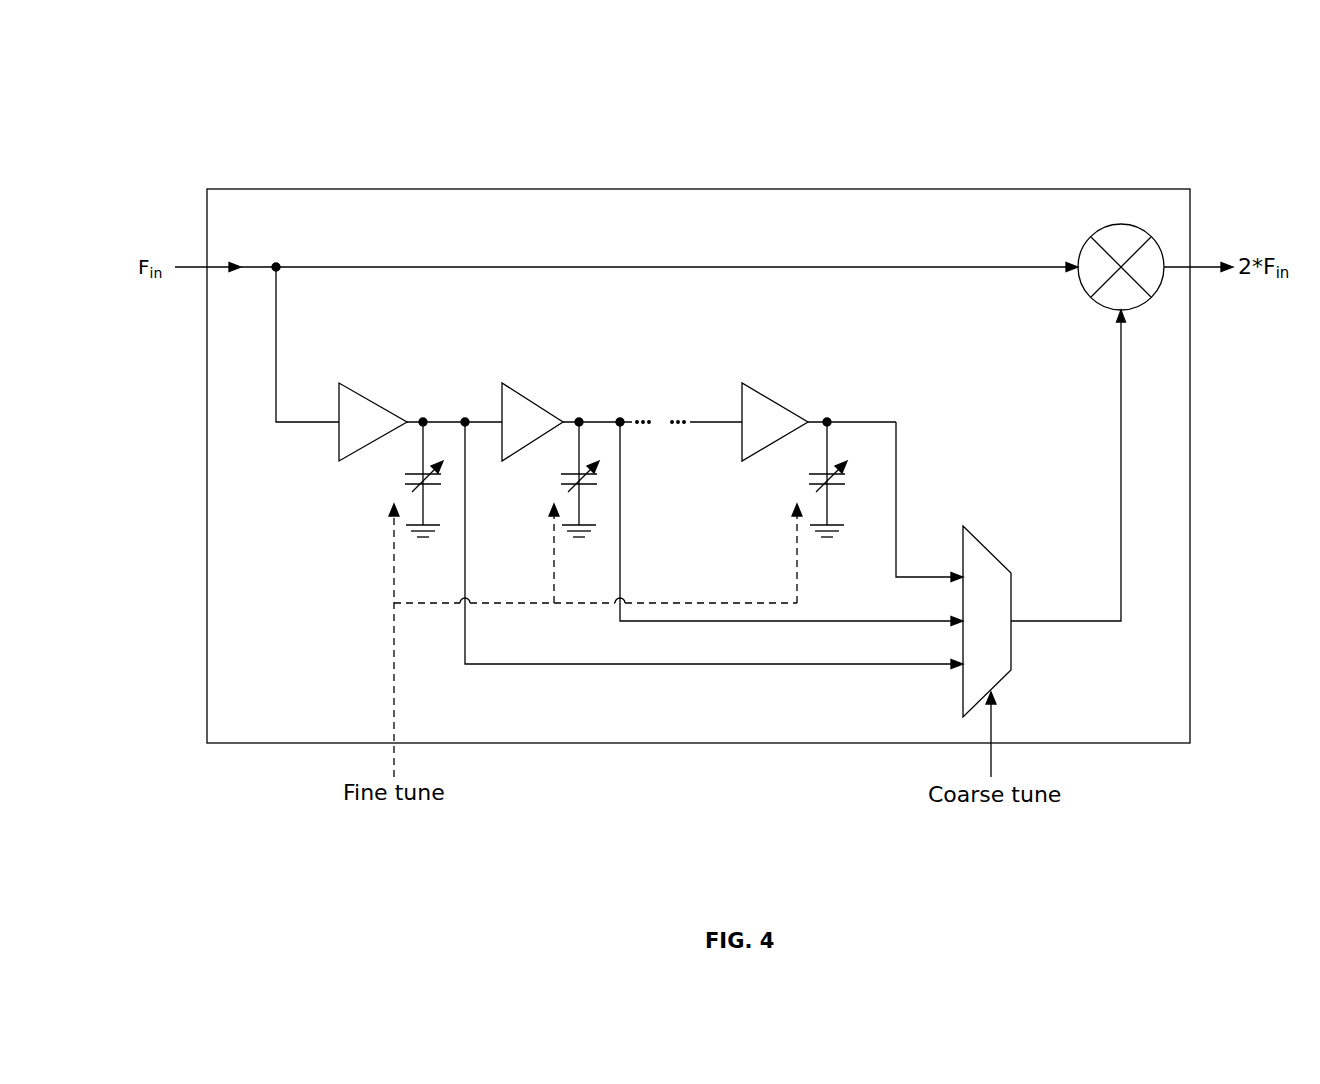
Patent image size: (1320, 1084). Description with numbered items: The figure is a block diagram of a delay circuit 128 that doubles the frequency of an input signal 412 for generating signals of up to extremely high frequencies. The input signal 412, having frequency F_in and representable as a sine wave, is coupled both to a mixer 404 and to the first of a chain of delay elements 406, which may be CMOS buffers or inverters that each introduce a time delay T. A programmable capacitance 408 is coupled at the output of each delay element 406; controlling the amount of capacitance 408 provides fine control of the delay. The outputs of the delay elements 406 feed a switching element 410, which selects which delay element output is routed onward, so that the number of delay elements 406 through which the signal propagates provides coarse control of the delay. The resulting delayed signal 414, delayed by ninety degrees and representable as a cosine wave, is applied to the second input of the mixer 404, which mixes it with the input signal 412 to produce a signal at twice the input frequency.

The delay circuit 128 is at (176, 82).
The mixer 404 is at (1092, 233).
The delay elements 406 is at (358, 394).
The capacitances 408 is at (627, 479).
The switching element 410 is at (991, 549).
The input signal 412 is at (942, 266).
The delayed signal 414 is at (1120, 362).